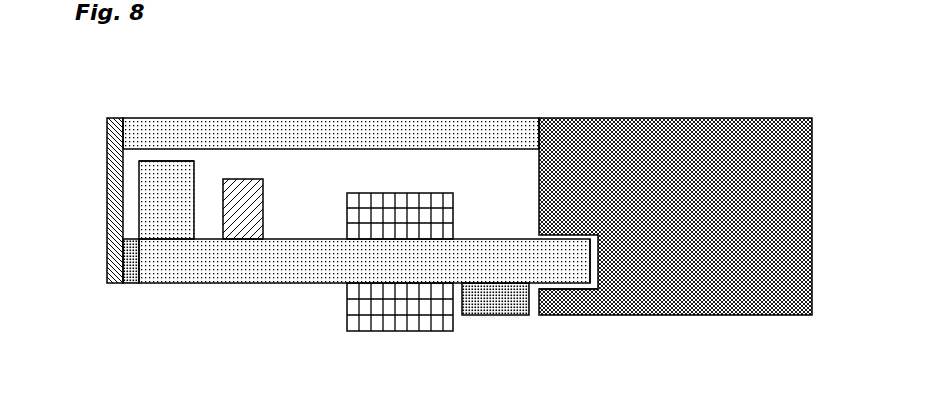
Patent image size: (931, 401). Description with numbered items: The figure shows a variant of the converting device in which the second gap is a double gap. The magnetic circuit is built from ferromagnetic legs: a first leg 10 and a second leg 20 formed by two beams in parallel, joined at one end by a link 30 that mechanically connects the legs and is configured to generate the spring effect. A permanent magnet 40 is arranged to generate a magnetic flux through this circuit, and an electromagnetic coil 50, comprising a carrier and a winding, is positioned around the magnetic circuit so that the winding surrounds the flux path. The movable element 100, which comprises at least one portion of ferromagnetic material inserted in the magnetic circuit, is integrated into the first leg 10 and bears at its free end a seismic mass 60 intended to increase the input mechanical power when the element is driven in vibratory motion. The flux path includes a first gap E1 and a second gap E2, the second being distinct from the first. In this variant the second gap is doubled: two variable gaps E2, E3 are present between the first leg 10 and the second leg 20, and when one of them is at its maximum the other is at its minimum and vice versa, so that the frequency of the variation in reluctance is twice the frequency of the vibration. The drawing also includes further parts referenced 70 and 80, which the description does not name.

The movable element 100 is at (465, 118).
The first leg 10 is at (343, 128).
The second leg 20 is at (248, 277).
The link 30 is at (108, 195).
The permanent magnet 40 is at (250, 206).
The electromagnetic coil 50 is at (418, 318).
The seismic mass 60 is at (643, 135).
The bottom layer 70 is at (497, 307).
The connecting portion 80 is at (173, 178).
The first gap E1 is at (155, 153).
The second gap E2 is at (570, 224).
The third gap E3 is at (563, 288).